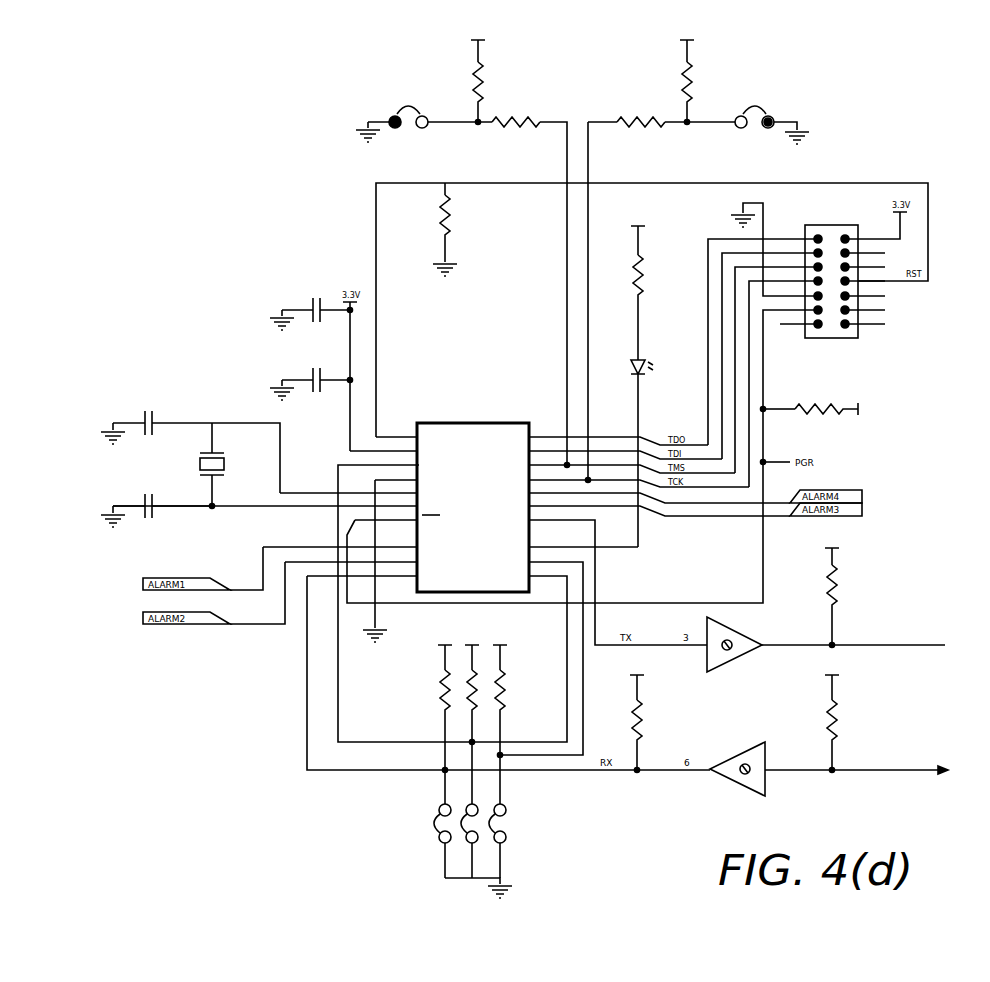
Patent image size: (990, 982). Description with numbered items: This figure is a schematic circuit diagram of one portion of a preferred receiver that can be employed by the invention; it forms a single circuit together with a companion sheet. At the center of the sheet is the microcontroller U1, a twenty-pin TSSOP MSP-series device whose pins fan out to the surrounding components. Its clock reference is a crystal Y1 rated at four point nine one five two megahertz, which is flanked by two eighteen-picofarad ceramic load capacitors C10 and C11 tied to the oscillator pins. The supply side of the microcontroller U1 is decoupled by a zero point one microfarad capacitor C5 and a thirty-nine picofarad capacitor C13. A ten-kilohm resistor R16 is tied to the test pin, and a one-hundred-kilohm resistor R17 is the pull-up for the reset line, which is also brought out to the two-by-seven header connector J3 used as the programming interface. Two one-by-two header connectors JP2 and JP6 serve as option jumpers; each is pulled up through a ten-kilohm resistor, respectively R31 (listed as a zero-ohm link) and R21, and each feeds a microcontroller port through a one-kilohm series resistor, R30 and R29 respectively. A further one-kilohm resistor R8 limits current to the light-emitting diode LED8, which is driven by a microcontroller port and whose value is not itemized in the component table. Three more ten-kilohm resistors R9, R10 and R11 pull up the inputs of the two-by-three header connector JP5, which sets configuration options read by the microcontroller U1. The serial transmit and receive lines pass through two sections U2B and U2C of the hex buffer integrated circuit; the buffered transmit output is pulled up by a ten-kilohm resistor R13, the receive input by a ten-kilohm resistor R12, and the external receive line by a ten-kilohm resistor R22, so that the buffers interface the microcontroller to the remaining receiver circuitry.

The resistor R31 is at (488, 75).
The resistor R30 is at (516, 122).
The header connector JP2 is at (399, 120).
The resistor R21 is at (697, 75).
The resistor R29 is at (641, 122).
The header connector JP6 is at (772, 120).
The resistor R16 is at (454, 229).
The resistor R8 is at (656, 287).
The yellow LED CMD31-21VYC/TR7 LED8 is at (651, 445).
The header connector J3 is at (836, 281).
The resistor R17 is at (822, 410).
The microcontroller U1 is at (336, 484).
The capacitor C5 is at (310, 313).
The capacitor C13 is at (310, 383).
The capacitor C10 is at (190, 444).
The capacitor C11 is at (156, 515).
The crystal Y1 is at (187, 466).
The resistor R9 is at (442, 718).
The resistor R10 is at (469, 718).
The resistor R11 is at (497, 718).
The header connector JP5 is at (489, 840).
The hex buffer U2B is at (826, 659).
The hex buffer U2C is at (820, 783).
The resistor R13 is at (846, 590).
The resistor R12 is at (656, 716).
The resistor R22 is at (850, 716).